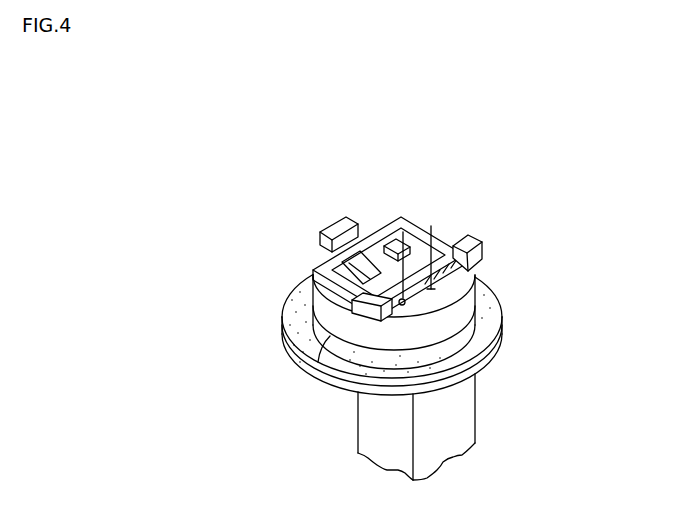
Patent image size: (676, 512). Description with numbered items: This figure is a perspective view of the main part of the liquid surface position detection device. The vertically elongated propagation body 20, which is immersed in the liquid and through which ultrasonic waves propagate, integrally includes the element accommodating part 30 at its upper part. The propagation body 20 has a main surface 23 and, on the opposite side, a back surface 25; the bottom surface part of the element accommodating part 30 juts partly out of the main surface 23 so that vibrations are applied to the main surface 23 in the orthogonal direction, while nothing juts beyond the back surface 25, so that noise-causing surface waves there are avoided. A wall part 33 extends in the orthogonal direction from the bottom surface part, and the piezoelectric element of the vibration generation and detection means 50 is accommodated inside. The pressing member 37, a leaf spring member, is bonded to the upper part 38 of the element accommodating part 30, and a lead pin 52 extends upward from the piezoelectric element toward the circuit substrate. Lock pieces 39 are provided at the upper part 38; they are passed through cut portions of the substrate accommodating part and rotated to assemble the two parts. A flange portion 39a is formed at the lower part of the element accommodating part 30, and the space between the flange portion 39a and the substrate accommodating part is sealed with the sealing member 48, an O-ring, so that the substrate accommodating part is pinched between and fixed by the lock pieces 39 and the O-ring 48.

The propagation body 20 is at (435, 427).
The main surface 23 is at (357, 424).
The back surface 25 is at (446, 428).
The element accommodating part 30 is at (425, 310).
The wall part 33 is at (323, 311).
The pressing member 37 is at (398, 226).
The upper part 38 is at (320, 253).
The lock pieces 39 is at (474, 244).
The flange portion 39a is at (498, 352).
The sealing member 48 is at (488, 309).
The vibration generation and detection means 50 is at (381, 239).
The lead pin 52 is at (403, 230).